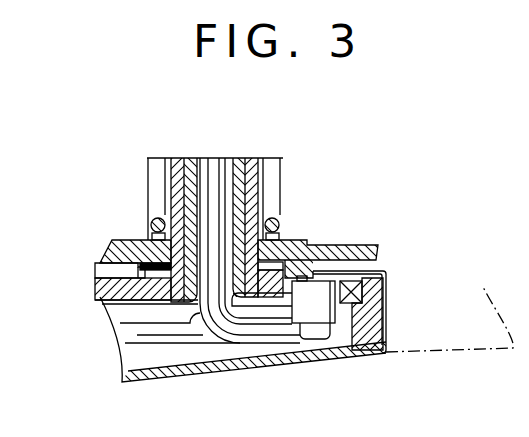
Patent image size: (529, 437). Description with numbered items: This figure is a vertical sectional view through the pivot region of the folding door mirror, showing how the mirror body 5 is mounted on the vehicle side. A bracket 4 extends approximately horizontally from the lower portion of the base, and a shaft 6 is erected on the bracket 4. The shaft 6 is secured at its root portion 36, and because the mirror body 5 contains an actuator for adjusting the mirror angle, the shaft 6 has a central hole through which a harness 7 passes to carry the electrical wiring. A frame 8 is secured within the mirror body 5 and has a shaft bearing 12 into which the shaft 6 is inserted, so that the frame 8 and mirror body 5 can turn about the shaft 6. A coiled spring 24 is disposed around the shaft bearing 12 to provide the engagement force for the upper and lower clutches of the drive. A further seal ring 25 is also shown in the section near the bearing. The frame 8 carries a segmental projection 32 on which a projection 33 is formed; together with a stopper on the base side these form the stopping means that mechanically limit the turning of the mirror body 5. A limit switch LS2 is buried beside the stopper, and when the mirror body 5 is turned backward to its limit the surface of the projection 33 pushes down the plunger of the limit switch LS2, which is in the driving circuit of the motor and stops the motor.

The bracket 4 is at (290, 364).
The mirror body 5 is at (443, 341).
The shaft 6 is at (240, 158).
The shaft bearing 12 is at (250, 158).
The coiled spring 24 is at (152, 221).
The O-ring seal 25 is at (286, 240).
The frame 8 is at (108, 254).
The projection 33 is at (330, 250).
The segmental projection 32 is at (98, 275).
The root portion 36 is at (97, 290).
The harness 7 is at (133, 338).
The limit switch LS2 is at (317, 290).